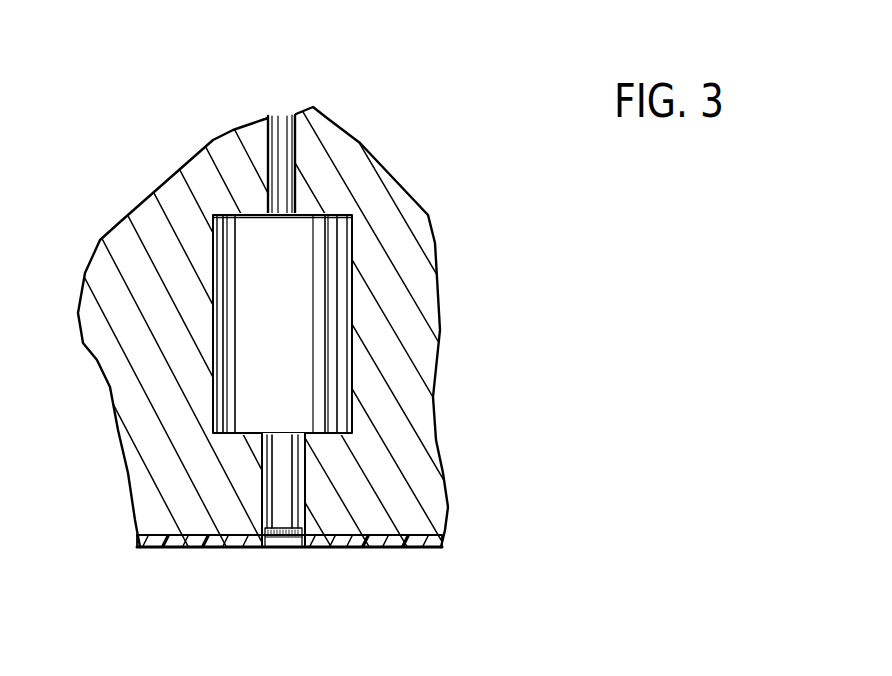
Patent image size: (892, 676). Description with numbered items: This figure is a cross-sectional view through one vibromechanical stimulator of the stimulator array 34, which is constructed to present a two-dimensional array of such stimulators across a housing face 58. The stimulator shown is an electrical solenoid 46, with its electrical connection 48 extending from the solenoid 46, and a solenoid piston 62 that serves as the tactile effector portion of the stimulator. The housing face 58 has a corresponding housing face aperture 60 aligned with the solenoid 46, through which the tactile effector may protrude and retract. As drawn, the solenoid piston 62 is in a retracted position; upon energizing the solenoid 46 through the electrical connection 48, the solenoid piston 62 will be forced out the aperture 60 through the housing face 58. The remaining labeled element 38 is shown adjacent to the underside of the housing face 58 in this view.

The stimulator array 34 is at (163, 180).
The base 38 is at (424, 555).
The solenoid 46 is at (212, 307).
The electrical connection 48 is at (272, 135).
The housing face 58 is at (364, 549).
The housing face aperture 60 is at (272, 556).
The solenoid piston 62 is at (303, 492).